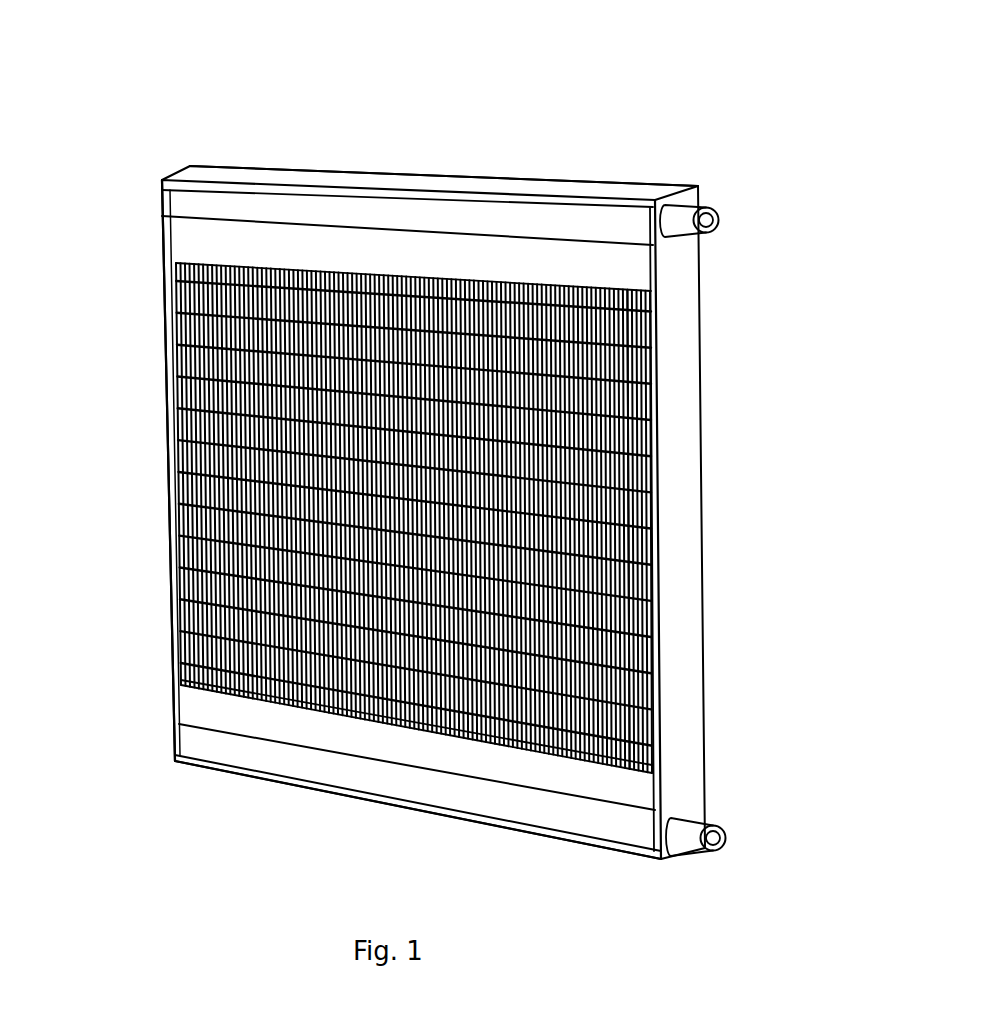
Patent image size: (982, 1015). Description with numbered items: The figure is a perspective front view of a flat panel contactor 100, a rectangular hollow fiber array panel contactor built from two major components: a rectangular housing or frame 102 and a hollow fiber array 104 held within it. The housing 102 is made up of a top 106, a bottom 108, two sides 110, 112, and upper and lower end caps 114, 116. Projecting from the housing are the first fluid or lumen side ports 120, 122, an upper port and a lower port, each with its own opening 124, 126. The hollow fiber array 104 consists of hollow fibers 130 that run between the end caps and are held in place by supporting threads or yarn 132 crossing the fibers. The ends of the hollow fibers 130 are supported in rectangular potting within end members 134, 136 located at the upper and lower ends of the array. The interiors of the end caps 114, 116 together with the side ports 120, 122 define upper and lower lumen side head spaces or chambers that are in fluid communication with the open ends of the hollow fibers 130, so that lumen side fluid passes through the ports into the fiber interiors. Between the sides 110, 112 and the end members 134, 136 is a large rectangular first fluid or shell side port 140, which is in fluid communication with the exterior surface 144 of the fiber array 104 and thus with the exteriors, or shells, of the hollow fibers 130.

The flat panel contactor 100 is at (487, 97).
The housing or frame 102 is at (313, 166).
The hollow fiber array 104 is at (176, 383).
The top 106 is at (601, 177).
The bottom 108 is at (212, 765).
The side 110 is at (693, 277).
The side 112 is at (158, 447).
The end cap 114 is at (515, 214).
The end cap 116 is at (498, 792).
The first fluid or lumen side port 120 is at (696, 190).
The first fluid or lumen side port 122 is at (683, 833).
The opening 124 is at (710, 225).
The opening 126 is at (718, 842).
The hollow fibers 130 is at (625, 395).
The supporting threads or yarn 132 is at (620, 372).
The end member 134 is at (183, 231).
The end member 136 is at (187, 695).
The first fluid or shell side port 140 is at (170, 495).
The exterior surface 144 is at (612, 532).